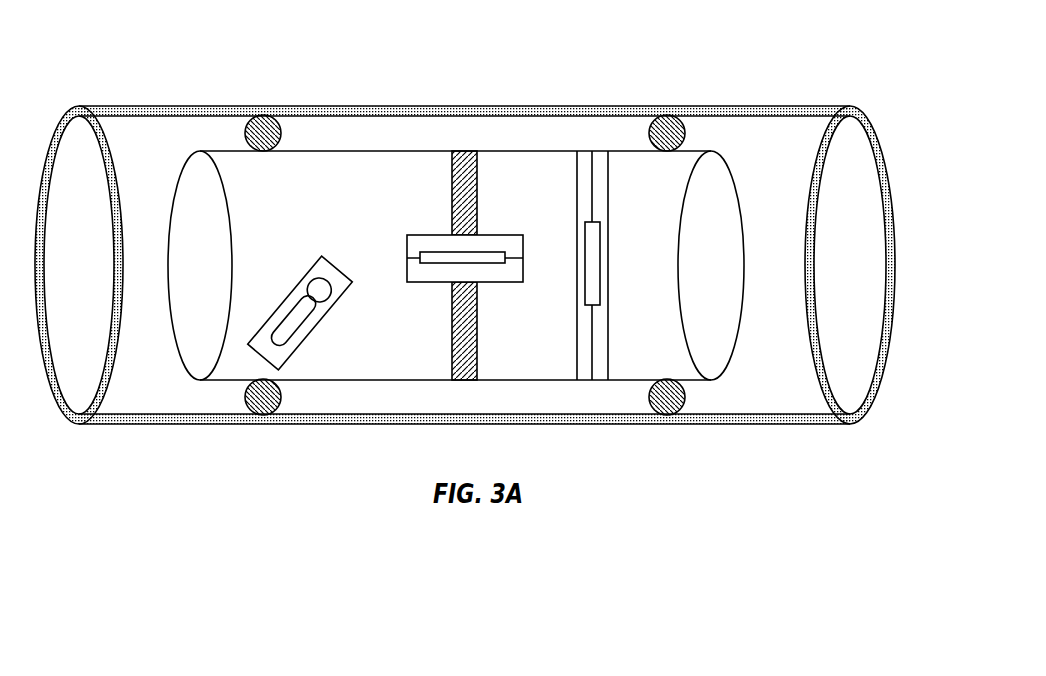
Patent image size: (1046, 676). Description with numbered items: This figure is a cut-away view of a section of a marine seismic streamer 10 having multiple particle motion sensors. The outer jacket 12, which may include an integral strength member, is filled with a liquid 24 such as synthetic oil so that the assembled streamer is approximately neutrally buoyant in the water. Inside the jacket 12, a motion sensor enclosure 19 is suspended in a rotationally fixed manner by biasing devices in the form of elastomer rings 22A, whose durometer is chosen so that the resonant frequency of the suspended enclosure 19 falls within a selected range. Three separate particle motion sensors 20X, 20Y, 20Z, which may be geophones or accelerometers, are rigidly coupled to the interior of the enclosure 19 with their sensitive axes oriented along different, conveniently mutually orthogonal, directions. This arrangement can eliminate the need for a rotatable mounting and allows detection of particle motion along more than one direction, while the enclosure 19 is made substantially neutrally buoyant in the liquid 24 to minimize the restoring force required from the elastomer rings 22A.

The streamer 10 is at (741, 40).
The jacket 12 is at (143, 104).
The motion sensor enclosure 19 is at (350, 382).
The liquid 24 is at (755, 380).
The elastomer rings 22A is at (264, 127).
The particle motion sensor 20X is at (320, 318).
The particle motion sensor 20Y is at (490, 235).
The particle motion sensor 20Z is at (575, 327).